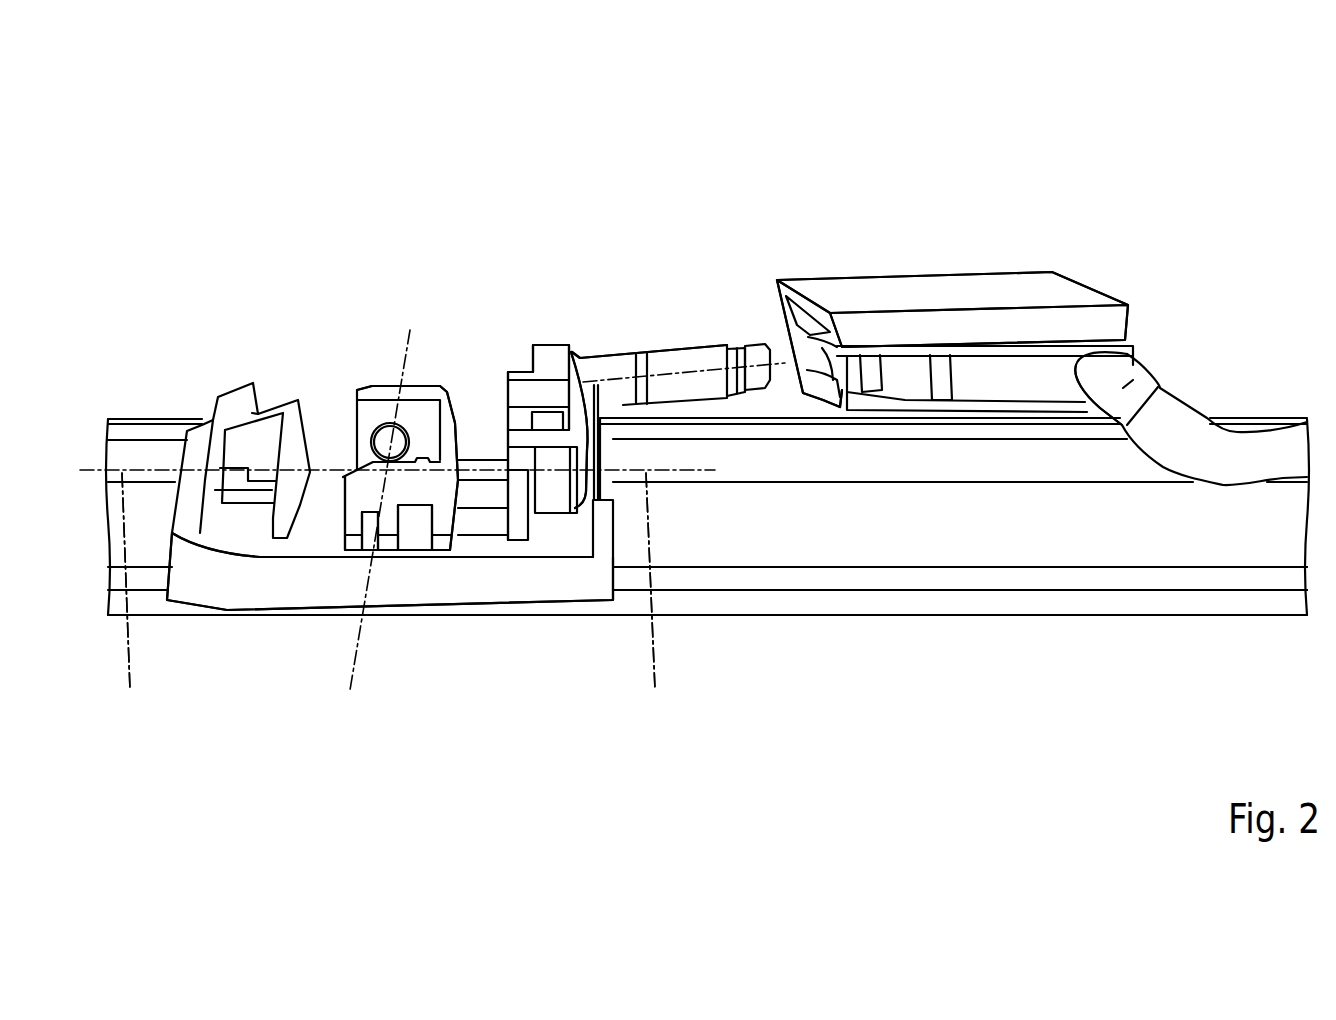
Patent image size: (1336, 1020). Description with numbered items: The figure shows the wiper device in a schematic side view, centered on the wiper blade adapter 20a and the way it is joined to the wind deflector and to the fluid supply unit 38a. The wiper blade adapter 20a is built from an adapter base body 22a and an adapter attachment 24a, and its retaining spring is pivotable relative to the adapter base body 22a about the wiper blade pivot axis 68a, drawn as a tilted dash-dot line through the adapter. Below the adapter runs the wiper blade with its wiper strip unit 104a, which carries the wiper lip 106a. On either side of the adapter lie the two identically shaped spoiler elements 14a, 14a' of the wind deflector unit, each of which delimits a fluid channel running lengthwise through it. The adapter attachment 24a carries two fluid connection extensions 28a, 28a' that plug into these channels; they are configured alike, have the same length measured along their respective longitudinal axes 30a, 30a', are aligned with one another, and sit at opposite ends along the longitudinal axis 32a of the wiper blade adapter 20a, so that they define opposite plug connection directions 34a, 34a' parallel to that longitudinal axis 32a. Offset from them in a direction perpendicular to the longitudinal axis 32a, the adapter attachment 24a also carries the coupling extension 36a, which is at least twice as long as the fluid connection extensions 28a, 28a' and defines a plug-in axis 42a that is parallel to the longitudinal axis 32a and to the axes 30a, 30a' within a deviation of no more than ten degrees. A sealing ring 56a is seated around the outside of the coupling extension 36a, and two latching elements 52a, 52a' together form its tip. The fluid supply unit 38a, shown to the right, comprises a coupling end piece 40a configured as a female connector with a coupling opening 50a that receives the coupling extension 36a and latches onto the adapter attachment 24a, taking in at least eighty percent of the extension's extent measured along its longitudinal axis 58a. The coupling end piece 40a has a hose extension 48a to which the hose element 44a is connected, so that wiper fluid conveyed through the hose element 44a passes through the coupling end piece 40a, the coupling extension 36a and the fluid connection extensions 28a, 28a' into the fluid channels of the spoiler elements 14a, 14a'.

The spoiler element 14a is at (693, 550).
The spoiler element 14a' is at (954, 549).
The wiper blade adapter 20a is at (287, 638).
The adapter base body 22a is at (223, 592).
The adapter attachment 24a is at (324, 490).
The fluid connection extension 28a is at (234, 412).
The fluid connection extension 28a' is at (605, 533).
The longitudinal axis 30a is at (125, 596).
The plug connection direction 34a is at (125, 596).
The longitudinal axis 30a' is at (656, 596).
The plug connection direction 34a' is at (656, 596).
The longitudinal axis 32a is at (487, 518).
The coupling extension 36a is at (680, 363).
The fluid supply unit 38a is at (1123, 196).
The coupling end piece 40a is at (953, 290).
The plug-in axis 42a is at (660, 347).
The longitudinal axis 58a is at (660, 347).
The hose element 44a is at (1183, 422).
The hose extension 48a is at (1123, 388).
The coupling opening 50a is at (786, 330).
The latching element 52a is at (745, 514).
The latching element 52a' is at (739, 342).
The sealing ring 56a is at (641, 356).
The wiper blade pivot axis 68a is at (408, 332).
The wiper strip unit 104a is at (400, 638).
The wiper lip 106a is at (807, 602).